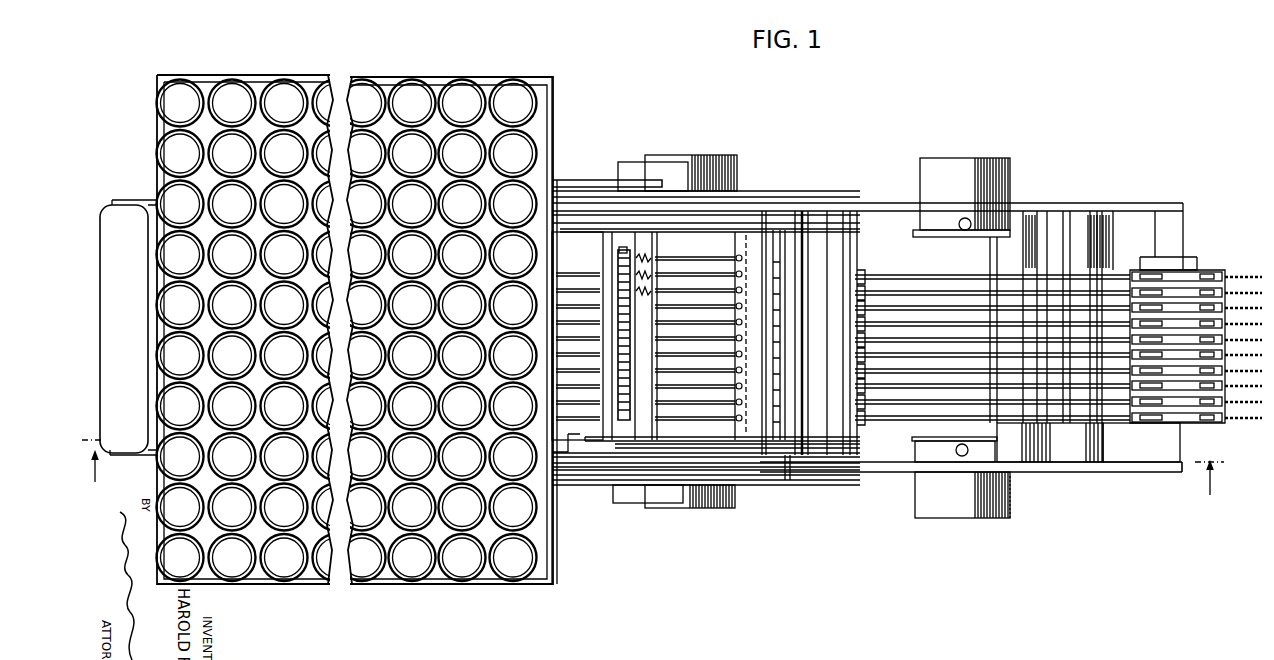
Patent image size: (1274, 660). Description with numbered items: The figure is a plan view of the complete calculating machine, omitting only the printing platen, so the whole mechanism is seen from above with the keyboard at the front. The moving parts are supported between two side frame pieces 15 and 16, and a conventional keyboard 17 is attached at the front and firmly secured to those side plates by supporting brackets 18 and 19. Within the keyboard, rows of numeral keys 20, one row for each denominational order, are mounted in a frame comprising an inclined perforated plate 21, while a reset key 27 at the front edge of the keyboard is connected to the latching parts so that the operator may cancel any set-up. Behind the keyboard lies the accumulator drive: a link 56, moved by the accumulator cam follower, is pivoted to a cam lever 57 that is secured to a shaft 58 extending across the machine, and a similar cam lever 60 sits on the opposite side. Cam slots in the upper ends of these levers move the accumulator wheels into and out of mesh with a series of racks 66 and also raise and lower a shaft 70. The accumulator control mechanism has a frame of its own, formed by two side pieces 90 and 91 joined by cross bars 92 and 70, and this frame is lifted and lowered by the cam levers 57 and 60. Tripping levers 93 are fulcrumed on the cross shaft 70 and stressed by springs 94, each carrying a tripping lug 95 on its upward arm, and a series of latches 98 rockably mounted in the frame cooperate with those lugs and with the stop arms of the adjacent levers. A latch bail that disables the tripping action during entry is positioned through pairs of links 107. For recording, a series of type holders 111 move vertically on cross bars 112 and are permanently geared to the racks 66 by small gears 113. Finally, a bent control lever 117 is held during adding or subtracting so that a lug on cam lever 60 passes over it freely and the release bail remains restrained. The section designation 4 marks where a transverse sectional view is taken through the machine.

The section line 4- 4 is at (653, 476).
The side frame piece 15 is at (896, 204).
The side frame piece 16 is at (872, 472).
The keyboard 17 is at (303, 600).
The supporting bracket 18 is at (321, 80).
The supporting bracket 19 is at (393, 585).
The numeral keys 20 is at (280, 568).
The inclined perforated plate 21 is at (535, 541).
The reset key 27 is at (124, 220).
The link 56 is at (600, 486).
The cam lever 57 is at (752, 478).
The shaft 58 is at (695, 156).
The cam lever 60 is at (746, 197).
The racks 66 is at (902, 276).
The shaft 70 is at (672, 170).
The side piece 90 is at (616, 232).
The side piece 91 is at (795, 466).
The cross bar 92 is at (760, 476).
The tripping levers 93 is at (675, 382).
The springs 94 is at (655, 285).
The tripping lug 95 is at (619, 252).
The latches 98 is at (720, 392).
The links 107 is at (737, 485).
The type holders 111 is at (1202, 275).
The cross bars 112 is at (1162, 230).
The small gears 113 is at (1063, 418).
The bent control lever 117 is at (584, 182).